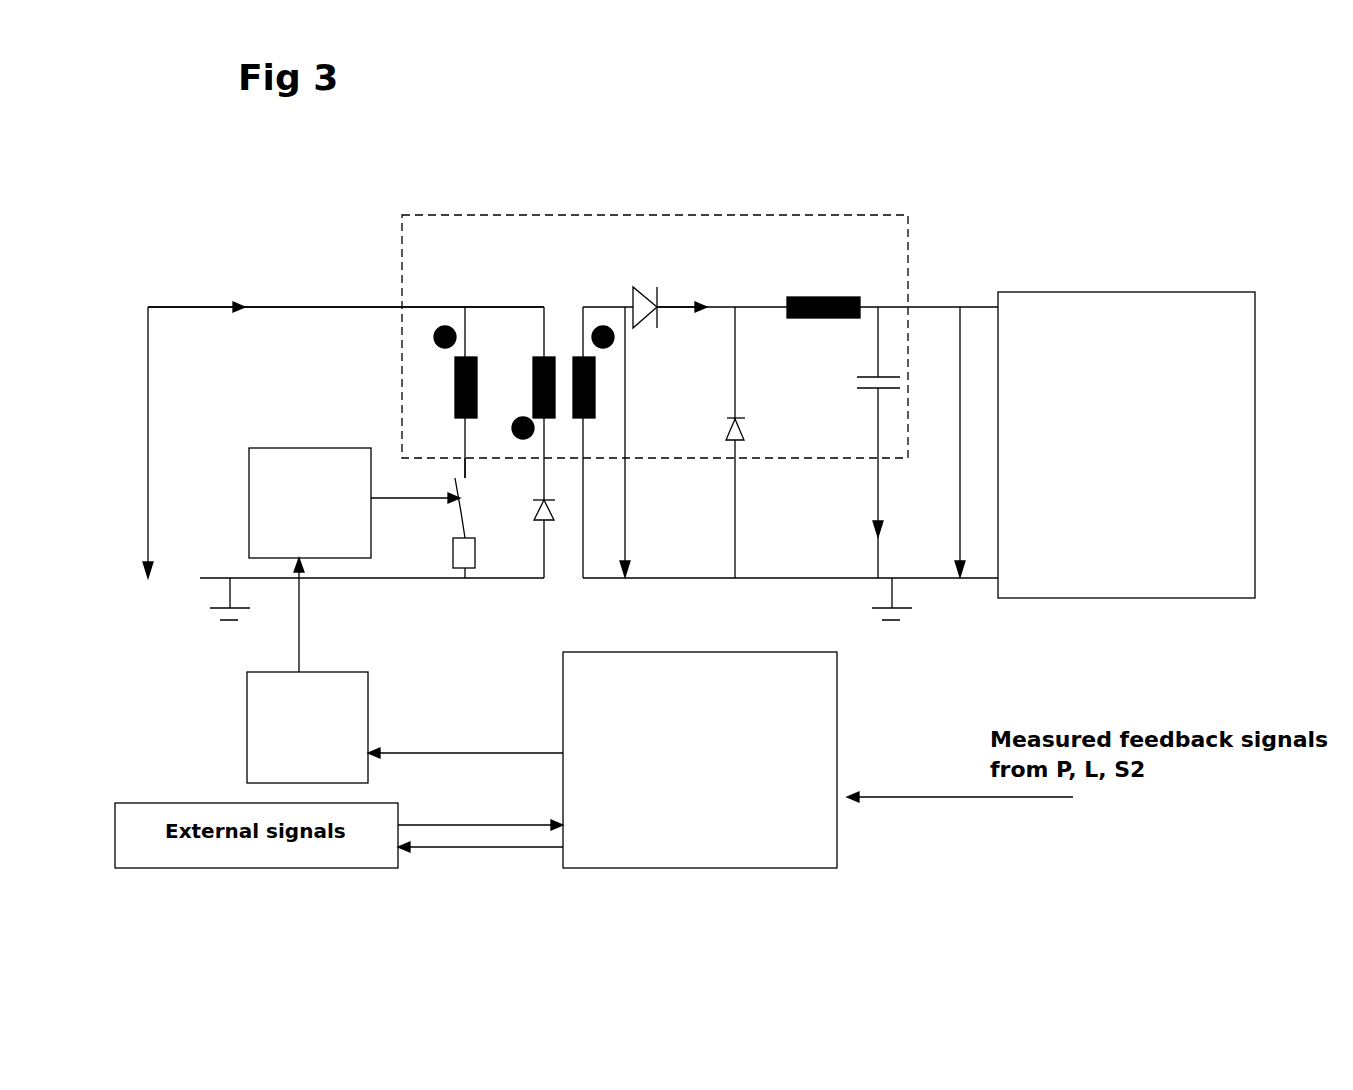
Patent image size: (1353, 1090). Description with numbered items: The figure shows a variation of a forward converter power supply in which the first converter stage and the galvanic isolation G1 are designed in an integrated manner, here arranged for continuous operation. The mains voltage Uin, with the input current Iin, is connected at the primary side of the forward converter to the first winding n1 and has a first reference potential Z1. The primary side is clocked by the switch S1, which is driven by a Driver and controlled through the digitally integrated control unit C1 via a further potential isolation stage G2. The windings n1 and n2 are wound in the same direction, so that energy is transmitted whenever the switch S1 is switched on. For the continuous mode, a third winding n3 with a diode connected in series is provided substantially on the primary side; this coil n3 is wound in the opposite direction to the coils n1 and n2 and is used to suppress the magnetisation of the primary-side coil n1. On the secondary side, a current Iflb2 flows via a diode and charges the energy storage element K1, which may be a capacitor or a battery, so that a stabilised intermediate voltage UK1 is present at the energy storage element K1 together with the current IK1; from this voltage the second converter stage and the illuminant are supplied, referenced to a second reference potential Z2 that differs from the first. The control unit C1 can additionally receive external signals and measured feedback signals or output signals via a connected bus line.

The galvanic isolation G1 is at (655, 336).
The potential isolation stage G2 is at (405, 670).
The digitally integrated control unit C1 is at (700, 760).
The energy storage element K1 is at (843, 437).
The switch S1 is at (437, 518).
The first reference potential Z1 is at (232, 626).
The second reference potential Z2 is at (894, 629).
The first winding n1 is at (451, 392).
The second winding n2 is at (599, 442).
The third winding n3 is at (529, 442).
The switch driver Driver is at (354, 503).
The input current Iin is at (346, 293).
The mains voltage Uin is at (171, 442).
The output current measurement IK1 is at (910, 504).
The intermediate voltage UK1 is at (926, 442).
The current Iflb2 is at (670, 301).